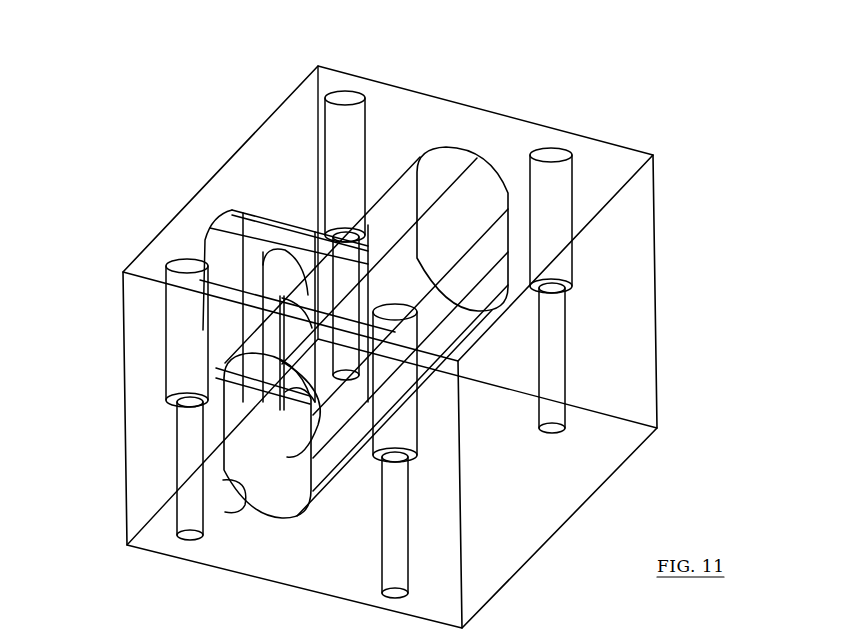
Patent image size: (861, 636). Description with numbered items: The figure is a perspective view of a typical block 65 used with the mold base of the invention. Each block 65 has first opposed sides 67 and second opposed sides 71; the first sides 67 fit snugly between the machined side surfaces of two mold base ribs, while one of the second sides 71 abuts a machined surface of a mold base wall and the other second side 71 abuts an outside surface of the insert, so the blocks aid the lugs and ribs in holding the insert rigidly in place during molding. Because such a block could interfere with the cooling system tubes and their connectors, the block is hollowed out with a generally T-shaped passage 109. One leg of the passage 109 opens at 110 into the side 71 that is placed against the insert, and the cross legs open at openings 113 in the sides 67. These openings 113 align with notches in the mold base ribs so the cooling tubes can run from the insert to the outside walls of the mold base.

The block 65 is at (657, 209).
The first opposed sides 67 is at (641, 329).
The second opposed sides 71 is at (238, 151).
The passage 109 is at (463, 151).
The opening of passage leg into side 110 is at (215, 330).
The openings 113 is at (510, 153).